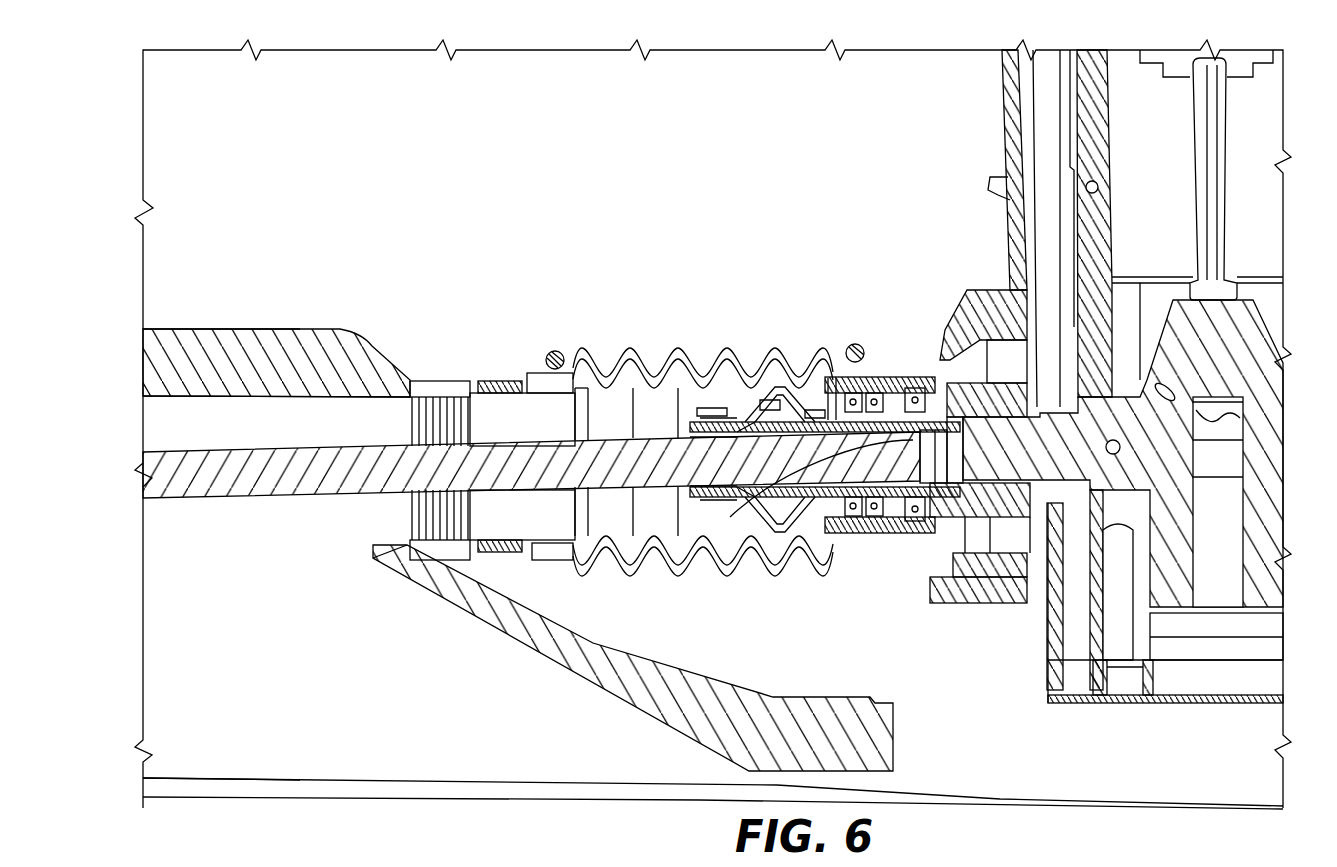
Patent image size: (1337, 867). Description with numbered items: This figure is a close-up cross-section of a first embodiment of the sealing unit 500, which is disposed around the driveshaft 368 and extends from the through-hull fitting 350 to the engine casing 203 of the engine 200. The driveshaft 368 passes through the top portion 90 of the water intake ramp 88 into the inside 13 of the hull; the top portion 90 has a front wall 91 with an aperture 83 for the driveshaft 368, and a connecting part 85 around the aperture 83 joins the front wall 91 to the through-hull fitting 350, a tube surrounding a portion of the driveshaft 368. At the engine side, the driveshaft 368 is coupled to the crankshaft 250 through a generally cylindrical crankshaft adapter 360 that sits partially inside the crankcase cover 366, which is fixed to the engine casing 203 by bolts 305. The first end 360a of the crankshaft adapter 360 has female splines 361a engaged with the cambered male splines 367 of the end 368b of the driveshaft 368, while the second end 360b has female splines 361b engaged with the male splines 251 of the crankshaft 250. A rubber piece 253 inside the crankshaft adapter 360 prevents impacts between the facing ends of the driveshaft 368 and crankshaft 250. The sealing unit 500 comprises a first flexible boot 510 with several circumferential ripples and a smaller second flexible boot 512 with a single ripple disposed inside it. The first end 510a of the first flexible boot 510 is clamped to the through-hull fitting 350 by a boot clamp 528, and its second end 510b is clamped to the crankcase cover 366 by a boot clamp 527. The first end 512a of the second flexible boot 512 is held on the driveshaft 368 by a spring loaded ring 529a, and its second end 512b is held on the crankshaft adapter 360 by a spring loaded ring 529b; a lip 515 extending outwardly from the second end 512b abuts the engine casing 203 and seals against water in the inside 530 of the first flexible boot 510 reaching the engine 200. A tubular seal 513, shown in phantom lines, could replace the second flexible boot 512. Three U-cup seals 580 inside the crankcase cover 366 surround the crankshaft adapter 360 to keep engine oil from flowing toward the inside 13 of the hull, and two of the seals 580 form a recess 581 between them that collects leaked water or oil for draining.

The sealing unit 500 is at (842, 190).
The inside of the hull 13 is at (672, 197).
The through-hull fitting 350 is at (480, 380).
The first end of the first flexible boot 510a is at (535, 378).
The boot clamp 528 is at (557, 350).
The first flexible boot 510 is at (595, 378).
The first end of the second flexible boot 512a is at (655, 375).
The spring loaded ring 529a is at (715, 378).
The second flexible boot 512 is at (745, 378).
The tubular seal 513 is at (765, 370).
The first end of the crankshaft adapter 360a is at (800, 378).
The second end of the second flexible boot 512b is at (805, 375).
The spring loaded ring 529b is at (820, 375).
The lip 515 is at (838, 375).
The boot clamp 527 is at (856, 345).
The second end of the first flexible boot 510b is at (878, 375).
The crankcase cover 366 is at (900, 345).
The bolts 305 is at (930, 330).
The recess 581 is at (897, 380).
The inside of the first flexible boot 530 is at (614, 422).
The connecting part 85 is at (290, 397).
The aperture 83 is at (312, 528).
The top portion 90 is at (402, 587).
The front wall 91 is at (498, 620).
The water intake ramp 88 is at (266, 677).
The driveshaft 368 is at (667, 573).
The male splines 367 is at (713, 573).
The end of the driveshaft 368b is at (778, 530).
The female splines 361a is at (913, 440).
The seals 580 is at (867, 525).
The rubber piece 253 is at (960, 527).
The male splines 251 is at (963, 597).
The crankshaft 250 is at (1013, 593).
The crankshaft adapter 360 is at (973, 603).
The second end of the crankshaft adapter 360b is at (1040, 600).
The engine casing 203 is at (1053, 683).
The female splines 361b is at (1128, 660).
The engine 200 is at (1225, 593).